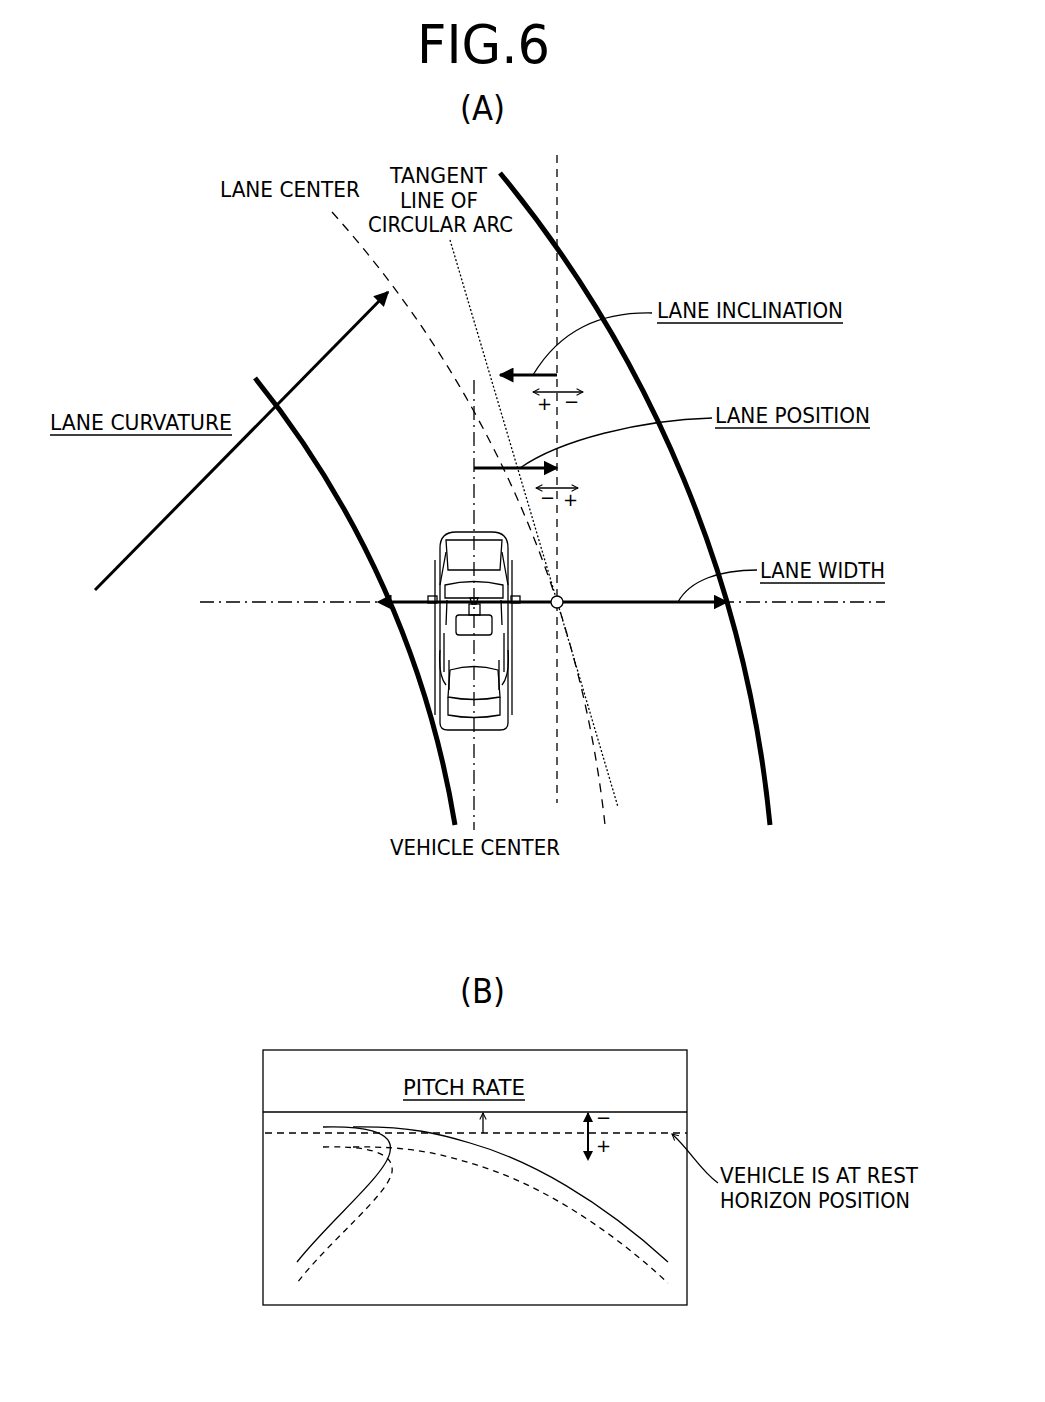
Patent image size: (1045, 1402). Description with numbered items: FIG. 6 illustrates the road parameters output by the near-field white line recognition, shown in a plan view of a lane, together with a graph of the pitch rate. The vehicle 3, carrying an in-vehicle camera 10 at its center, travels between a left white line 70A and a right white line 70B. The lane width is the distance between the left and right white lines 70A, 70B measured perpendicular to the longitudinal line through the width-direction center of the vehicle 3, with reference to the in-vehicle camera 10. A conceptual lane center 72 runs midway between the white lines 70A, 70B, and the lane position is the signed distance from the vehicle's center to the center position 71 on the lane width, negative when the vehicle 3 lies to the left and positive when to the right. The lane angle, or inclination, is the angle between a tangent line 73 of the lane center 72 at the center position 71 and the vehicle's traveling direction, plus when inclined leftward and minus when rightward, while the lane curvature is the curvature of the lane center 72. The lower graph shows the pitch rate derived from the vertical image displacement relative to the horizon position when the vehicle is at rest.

The vehicle 3 is at (440, 683).
The in-vehicle camera 10 is at (468, 612).
The left white line 70A is at (438, 762).
The right white line 70B is at (757, 712).
The center position 71 is at (564, 606).
The lane center 72 is at (352, 236).
The tangent line 73 is at (475, 297).